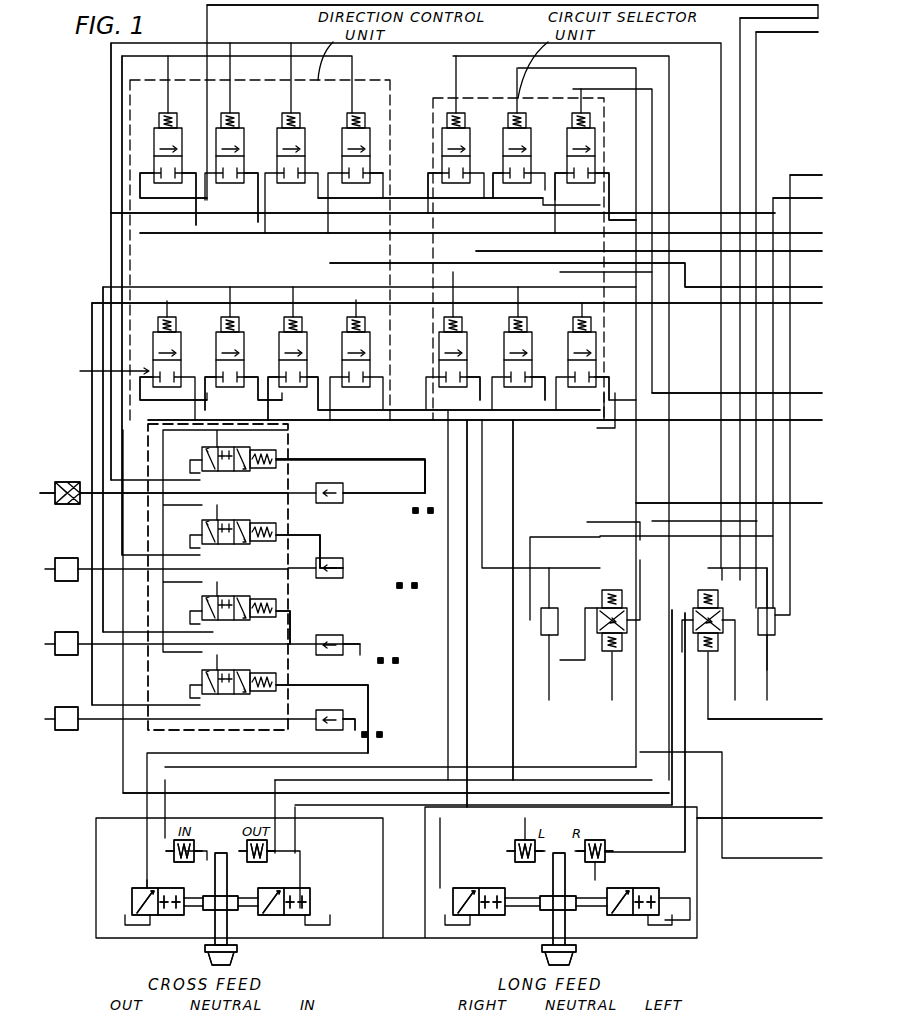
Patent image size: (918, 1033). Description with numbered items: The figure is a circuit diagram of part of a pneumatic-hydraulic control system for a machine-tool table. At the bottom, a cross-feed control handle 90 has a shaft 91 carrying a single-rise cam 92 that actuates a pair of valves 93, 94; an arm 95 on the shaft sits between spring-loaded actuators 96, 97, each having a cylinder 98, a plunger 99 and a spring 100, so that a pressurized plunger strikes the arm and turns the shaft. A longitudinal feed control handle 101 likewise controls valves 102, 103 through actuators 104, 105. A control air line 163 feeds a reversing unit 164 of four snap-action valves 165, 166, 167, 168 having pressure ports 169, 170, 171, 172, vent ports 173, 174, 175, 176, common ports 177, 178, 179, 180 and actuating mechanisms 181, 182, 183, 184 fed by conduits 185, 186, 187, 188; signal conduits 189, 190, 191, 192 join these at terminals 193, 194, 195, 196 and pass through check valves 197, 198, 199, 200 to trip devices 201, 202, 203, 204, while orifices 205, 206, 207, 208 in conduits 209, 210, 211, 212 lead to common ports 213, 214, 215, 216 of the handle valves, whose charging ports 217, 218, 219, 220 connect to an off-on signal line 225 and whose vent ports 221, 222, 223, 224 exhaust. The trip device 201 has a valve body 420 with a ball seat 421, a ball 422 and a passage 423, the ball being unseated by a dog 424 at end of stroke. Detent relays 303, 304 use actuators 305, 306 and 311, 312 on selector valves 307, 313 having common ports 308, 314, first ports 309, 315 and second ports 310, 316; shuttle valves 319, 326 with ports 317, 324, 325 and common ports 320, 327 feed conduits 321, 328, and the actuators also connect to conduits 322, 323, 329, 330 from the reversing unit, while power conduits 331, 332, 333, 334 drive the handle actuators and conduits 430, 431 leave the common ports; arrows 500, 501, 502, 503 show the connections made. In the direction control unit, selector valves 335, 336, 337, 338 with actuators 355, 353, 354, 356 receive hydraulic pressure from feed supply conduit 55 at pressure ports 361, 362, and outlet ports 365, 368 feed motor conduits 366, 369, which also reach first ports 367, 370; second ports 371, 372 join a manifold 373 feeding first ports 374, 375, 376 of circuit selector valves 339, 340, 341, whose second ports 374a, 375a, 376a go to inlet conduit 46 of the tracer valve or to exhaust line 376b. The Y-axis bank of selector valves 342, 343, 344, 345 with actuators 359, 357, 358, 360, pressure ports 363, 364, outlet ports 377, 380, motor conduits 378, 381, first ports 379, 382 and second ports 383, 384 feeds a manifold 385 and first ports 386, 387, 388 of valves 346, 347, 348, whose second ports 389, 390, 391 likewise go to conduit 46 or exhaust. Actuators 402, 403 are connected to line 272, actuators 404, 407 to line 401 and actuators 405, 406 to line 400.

The inlet conduit 46 is at (500, 254).
The feed supply conduit 55 is at (280, 8).
The cross-feed control handle 90 is at (200, 961).
The shaft 91 is at (230, 912).
The cam 92 is at (212, 912).
The valve 93 is at (143, 916).
The valve 94 is at (300, 916).
The arm 95 is at (222, 853).
The spring-loaded actuator 96 is at (162, 833).
The spring-loaded actuator 97 is at (260, 835).
The cylinder 98 is at (184, 840).
The plunger 99 is at (162, 835).
The spring 100 is at (236, 833).
The longitudinal feed control handle 101 is at (538, 962).
The valve 102 is at (462, 912).
The valve 103 is at (636, 916).
The actuator 104 is at (507, 851).
The actuator 105 is at (605, 852).
The control air line 163 is at (768, 723).
The reversing unit 164 is at (144, 737).
The snap-action valve 165 is at (241, 463).
The snap-action valve 166 is at (241, 537).
The snap-action valve 167 is at (243, 612).
The snap-action valve 168 is at (242, 685).
The pressure port 169 is at (230, 463).
The pressure port 170 is at (231, 537).
The pressure port 171 is at (230, 612).
The pressure port 172 is at (234, 685).
The vent port 173 is at (230, 471).
The vent port 174 is at (231, 545).
The vent port 175 is at (230, 620).
The vent port 176 is at (234, 694).
The common port 177 is at (247, 471).
The common port 178 is at (248, 545).
The common port 179 is at (247, 620).
The common port 180 is at (234, 694).
The actuating mechanism 181 is at (262, 468).
The actuating mechanism 182 is at (262, 542).
The actuating mechanism 183 is at (262, 618).
The actuating mechanism 184 is at (262, 692).
The conduit 185 is at (314, 466).
The conduit 186 is at (314, 541).
The conduit 187 is at (319, 614).
The conduit 188 is at (291, 686).
The signal conduit 189 is at (383, 496).
The signal conduit 190 is at (378, 578).
The signal conduit 191 is at (388, 652).
The signal conduit 192 is at (352, 715).
The terminal 193 is at (422, 492).
The terminal 194 is at (405, 570).
The terminal 195 is at (390, 644).
The terminal 196 is at (370, 712).
The check valve 197 is at (361, 483).
The check valve 198 is at (339, 559).
The check valve 199 is at (343, 636).
The check valve 200 is at (323, 706).
The trip device 201 is at (164, 487).
The trip device 202 is at (78, 582).
The trip device 203 is at (78, 656).
The trip device 204 is at (78, 731).
The orifice 205 is at (412, 513).
The orifice 206 is at (408, 590).
The orifice 207 is at (378, 665).
The orifice 208 is at (352, 743).
The conduit 209 is at (420, 502).
The conduit 210 is at (405, 578).
The conduit 211 is at (390, 652).
The conduit 212 is at (357, 730).
The common port 213 is at (636, 916).
The common port 214 is at (462, 912).
The common port 215 is at (304, 916).
The common port 216 is at (143, 916).
The charging port 217 is at (128, 880).
The charging port 218 is at (280, 918).
The charging port 219 is at (450, 878).
The charging port 220 is at (666, 880).
The vent port 221 is at (143, 917).
The vent port 222 is at (304, 917).
The vent port 223 is at (462, 914).
The vent port 224 is at (635, 916).
The off-on signal line 225 is at (766, 818).
The line 272 is at (729, 495).
The direction control actuator relay 303 is at (614, 625).
The direction control actuator relay 304 is at (721, 618).
The actuator 305 is at (614, 625).
The actuator 306 is at (612, 652).
The selector valve 307 is at (614, 633).
The common port 308 is at (614, 633).
The first port 309 is at (630, 633).
The second port 310 is at (630, 633).
The actuator 311 is at (721, 618).
The actuator 312 is at (727, 618).
The selector valve 313 is at (727, 618).
The common port 314 is at (727, 618).
The first port 315 is at (721, 618).
The second port 316 is at (727, 618).
The port 317 is at (523, 621).
The shuttle valve 319 is at (545, 558).
The common port 320 is at (518, 634).
The conduit 321 is at (787, 198).
The conduit 322 is at (92, 328).
The conduit 323 is at (103, 353).
The port 324 is at (792, 634).
The port 325 is at (770, 640).
The shuttle valve 326 is at (791, 634).
The common port 327 is at (792, 634).
The conduit 328 is at (795, 175).
The conduit 329 is at (111, 104).
The conduit 330 is at (122, 126).
The power conduit 331 is at (467, 765).
The power conduit 332 is at (500, 765).
The power conduit 333 is at (672, 742).
The power conduit 334 is at (685, 753).
The selector valve 335 is at (161, 137).
The selector valve 336 is at (246, 133).
The selector valve 337 is at (307, 151).
The selector valve 338 is at (361, 133).
The selector valve 339 is at (442, 129).
The selector valve 340 is at (519, 140).
The selector valve 341 is at (579, 140).
The selector valve 342 is at (133, 350).
The selector valve 343 is at (299, 329).
The selector valve 344 is at (308, 351).
The selector valve 345 is at (369, 340).
The selector valve 346 is at (456, 352).
The selector valve 347 is at (514, 342).
The selector valve 348 is at (565, 352).
The actuator 353 is at (246, 122).
The actuator 354 is at (307, 143).
The actuator 355 is at (161, 137).
The actuator 356 is at (361, 122).
The actuator 357 is at (217, 329).
The actuator 358 is at (308, 329).
The actuator 359 is at (133, 329).
The actuator 360 is at (367, 329).
The pressure port 361 is at (158, 172).
The pressure port 362 is at (212, 200).
The pressure port 363 is at (190, 326).
The pressure port 364 is at (220, 375).
The outlet port 365 is at (182, 195).
The conduit 366 is at (235, 216).
The first port 367 is at (275, 172).
The outlet port 368 is at (255, 180).
The conduit 369 is at (272, 232).
The first port 370 is at (343, 170).
The second port 371 is at (291, 158).
The second port 372 is at (383, 172).
The manifold 373 is at (385, 198).
The first port 374 is at (443, 170).
The second port 374a is at (450, 185).
The first port 375 is at (505, 172).
The second port 375a is at (512, 185).
The first port 376 is at (568, 172).
The second port 376a is at (576, 186).
The exhaust line 376b is at (618, 222).
The outlet port 377 is at (185, 400).
The conduit 378 is at (820, 412).
The first port 379 is at (284, 398).
The outlet port 380 is at (231, 396).
The conduit 381 is at (268, 270).
The first port 382 is at (298, 395).
The second port 383 is at (310, 377).
The second port 384 is at (365, 377).
The manifold 385 is at (366, 415).
The first port 386 is at (440, 377).
The first port 387 is at (508, 377).
The first port 388 is at (570, 377).
The second port 389 is at (465, 396).
The second port 390 is at (521, 396).
The second port 391 is at (605, 402).
The line 400 is at (805, 303).
The line 401 is at (820, 385).
The actuator 402 is at (519, 129).
The actuator 403 is at (514, 332).
The actuator 404 is at (579, 125).
The actuator 405 is at (565, 337).
The actuator 406 is at (442, 122).
The actuator 407 is at (454, 332).
The valve body 420 is at (164, 496).
The ball seat 421 is at (164, 487).
The ball 422 is at (82, 520).
The passage 423 is at (164, 521).
The dog 424 is at (164, 521).
The conduit 430 is at (807, 28).
The conduit 431 is at (787, 51).
The arrow 500 is at (615, 649).
The arrow 501 is at (627, 633).
The arrow 502 is at (727, 604).
The arrow 503 is at (720, 600).